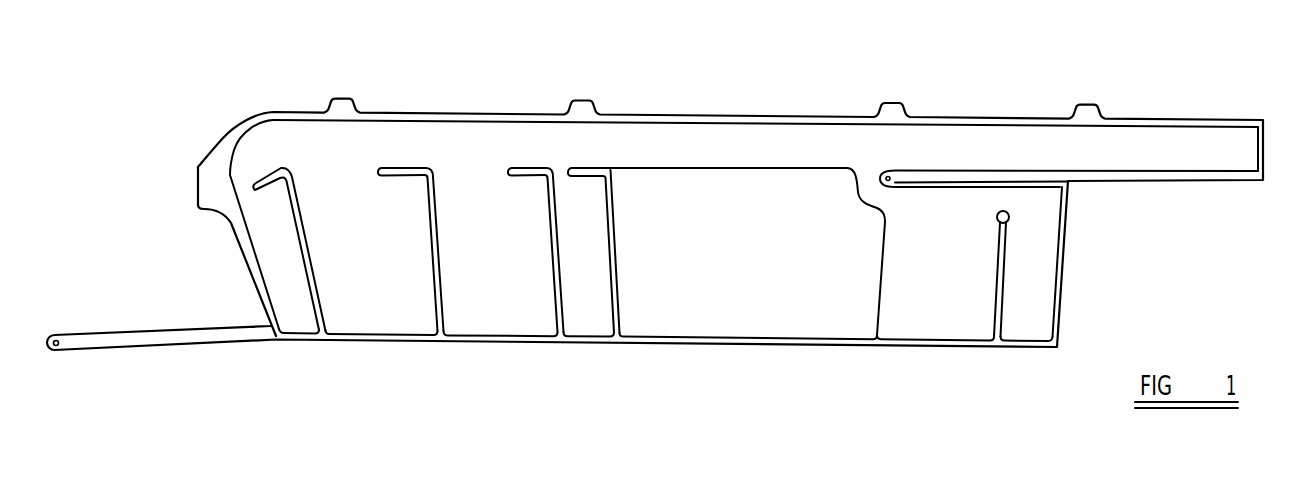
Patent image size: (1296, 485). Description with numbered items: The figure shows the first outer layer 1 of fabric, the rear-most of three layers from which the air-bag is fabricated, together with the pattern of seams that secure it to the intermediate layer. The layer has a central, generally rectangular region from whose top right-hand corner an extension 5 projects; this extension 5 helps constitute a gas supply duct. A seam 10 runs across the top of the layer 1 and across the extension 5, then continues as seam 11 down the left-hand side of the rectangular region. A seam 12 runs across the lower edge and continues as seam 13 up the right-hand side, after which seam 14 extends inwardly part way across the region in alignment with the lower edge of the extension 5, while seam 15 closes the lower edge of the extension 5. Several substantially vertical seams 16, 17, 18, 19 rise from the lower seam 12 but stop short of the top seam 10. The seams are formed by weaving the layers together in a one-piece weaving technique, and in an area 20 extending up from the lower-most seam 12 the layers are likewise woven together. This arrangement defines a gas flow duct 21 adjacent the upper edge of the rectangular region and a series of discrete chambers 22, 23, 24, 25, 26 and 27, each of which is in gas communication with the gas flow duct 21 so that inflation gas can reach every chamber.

The first outer layer 1 is at (992, 107).
The extension 5 is at (1188, 158).
The seam 10 is at (721, 115).
The seam 11 is at (257, 277).
The seam 12 is at (516, 346).
The seam 13 is at (1067, 230).
The seam 14 is at (1007, 177).
The seam 15 is at (1157, 182).
The vertical seam 16 is at (320, 278).
The vertical seam 17 is at (430, 228).
The vertical seam 18 is at (550, 220).
The vertical seam 19 is at (997, 249).
The area 20 is at (755, 235).
The gas flow duct 21 is at (657, 147).
The chamber 22 is at (283, 276).
The chamber 23 is at (382, 277).
The chamber 24 is at (501, 278).
The chamber 25 is at (588, 278).
The chamber 26 is at (935, 302).
The chamber 27 is at (1029, 302).